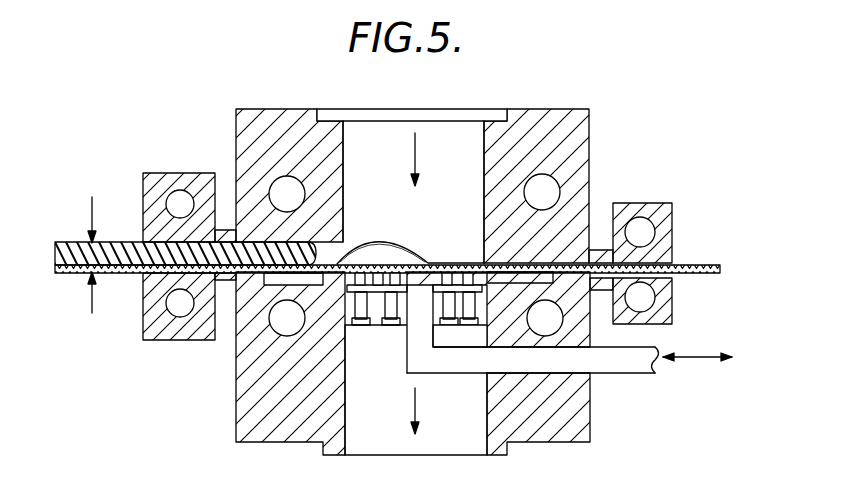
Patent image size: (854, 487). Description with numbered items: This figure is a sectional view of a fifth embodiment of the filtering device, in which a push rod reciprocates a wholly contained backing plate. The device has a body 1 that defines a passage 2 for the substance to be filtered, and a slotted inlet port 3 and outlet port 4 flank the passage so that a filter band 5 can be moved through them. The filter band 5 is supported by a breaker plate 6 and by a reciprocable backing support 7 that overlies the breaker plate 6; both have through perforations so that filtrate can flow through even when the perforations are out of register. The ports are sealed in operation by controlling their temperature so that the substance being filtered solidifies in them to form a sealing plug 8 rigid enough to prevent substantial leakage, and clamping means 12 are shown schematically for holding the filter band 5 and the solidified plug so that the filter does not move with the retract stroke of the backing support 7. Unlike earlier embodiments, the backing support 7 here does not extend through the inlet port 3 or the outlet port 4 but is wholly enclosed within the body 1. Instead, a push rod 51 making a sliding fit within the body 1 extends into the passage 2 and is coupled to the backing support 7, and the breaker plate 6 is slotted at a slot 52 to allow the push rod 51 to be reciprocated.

The body 1 is at (567, 122).
The passage 2 is at (382, 158).
The inlet port 3 is at (665, 214).
The outlet port 4 is at (166, 173).
The filter band 5 is at (120, 274).
The breaker plate 6 is at (367, 326).
The backing support 7 is at (337, 272).
The sealing plug 8 is at (122, 242).
The clamping means 12 is at (92, 313).
The push rod 51 is at (624, 365).
The slot 52 is at (393, 312).